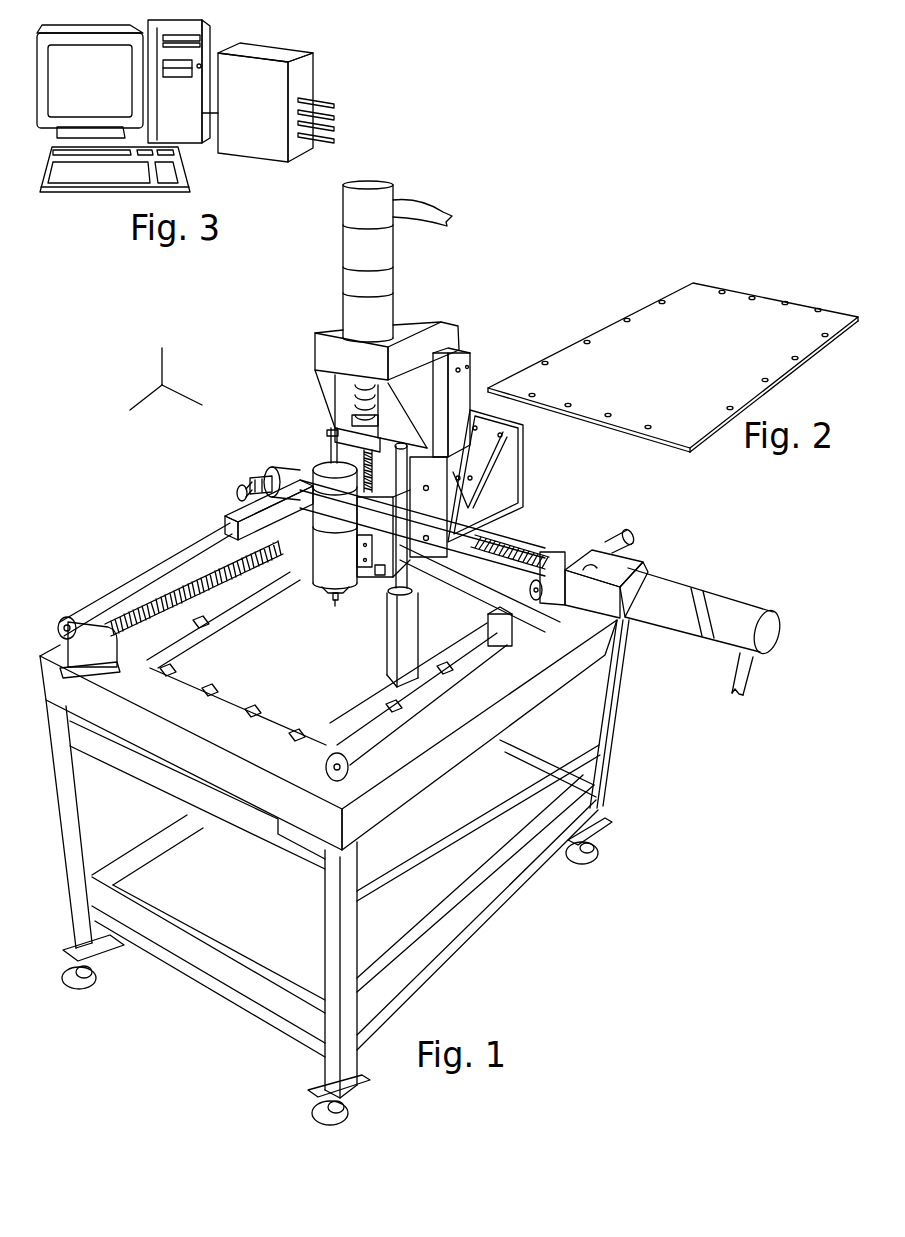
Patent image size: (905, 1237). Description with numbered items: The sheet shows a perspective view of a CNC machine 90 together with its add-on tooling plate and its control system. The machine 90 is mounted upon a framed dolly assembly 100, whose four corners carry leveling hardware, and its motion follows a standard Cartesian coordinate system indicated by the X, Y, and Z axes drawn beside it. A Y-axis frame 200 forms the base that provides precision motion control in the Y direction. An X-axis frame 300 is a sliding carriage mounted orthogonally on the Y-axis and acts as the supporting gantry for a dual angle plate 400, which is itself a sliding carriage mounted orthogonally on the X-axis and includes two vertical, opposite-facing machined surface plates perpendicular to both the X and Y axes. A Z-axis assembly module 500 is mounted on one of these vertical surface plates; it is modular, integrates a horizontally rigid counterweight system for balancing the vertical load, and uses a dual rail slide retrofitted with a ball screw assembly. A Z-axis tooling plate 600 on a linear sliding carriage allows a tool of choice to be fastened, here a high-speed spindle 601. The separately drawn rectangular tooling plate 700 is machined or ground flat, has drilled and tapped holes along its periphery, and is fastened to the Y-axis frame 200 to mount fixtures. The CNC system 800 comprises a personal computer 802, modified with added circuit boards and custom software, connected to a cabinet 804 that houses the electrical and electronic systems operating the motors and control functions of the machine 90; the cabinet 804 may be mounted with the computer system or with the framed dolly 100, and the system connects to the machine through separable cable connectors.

In FIG. 1, the machine 90 is at (205, 455).
In FIG. 1, the framed dolly assembly 100 is at (466, 798).
In FIG. 1, the Y-axis frame 200 is at (55, 653).
In FIG. 1, the X-axis frame 300 is at (232, 522).
In FIG. 1, the dual angle plate 400 is at (503, 500).
In FIG. 1, the Z-axis assembly module 500 is at (327, 410).
In FIG. 1, the Z-axis tooling plate 600 is at (378, 553).
In FIG. 1, the high-speed spindle 601 is at (332, 572).
In FIG. 2, the tooling plate 700 is at (662, 330).
In FIG. 3, the computer numerical control system 800 is at (185, 114).
In FIG. 3, the personal computer 802 is at (187, 120).
In FIG. 3, the cabinet 804 is at (257, 110).